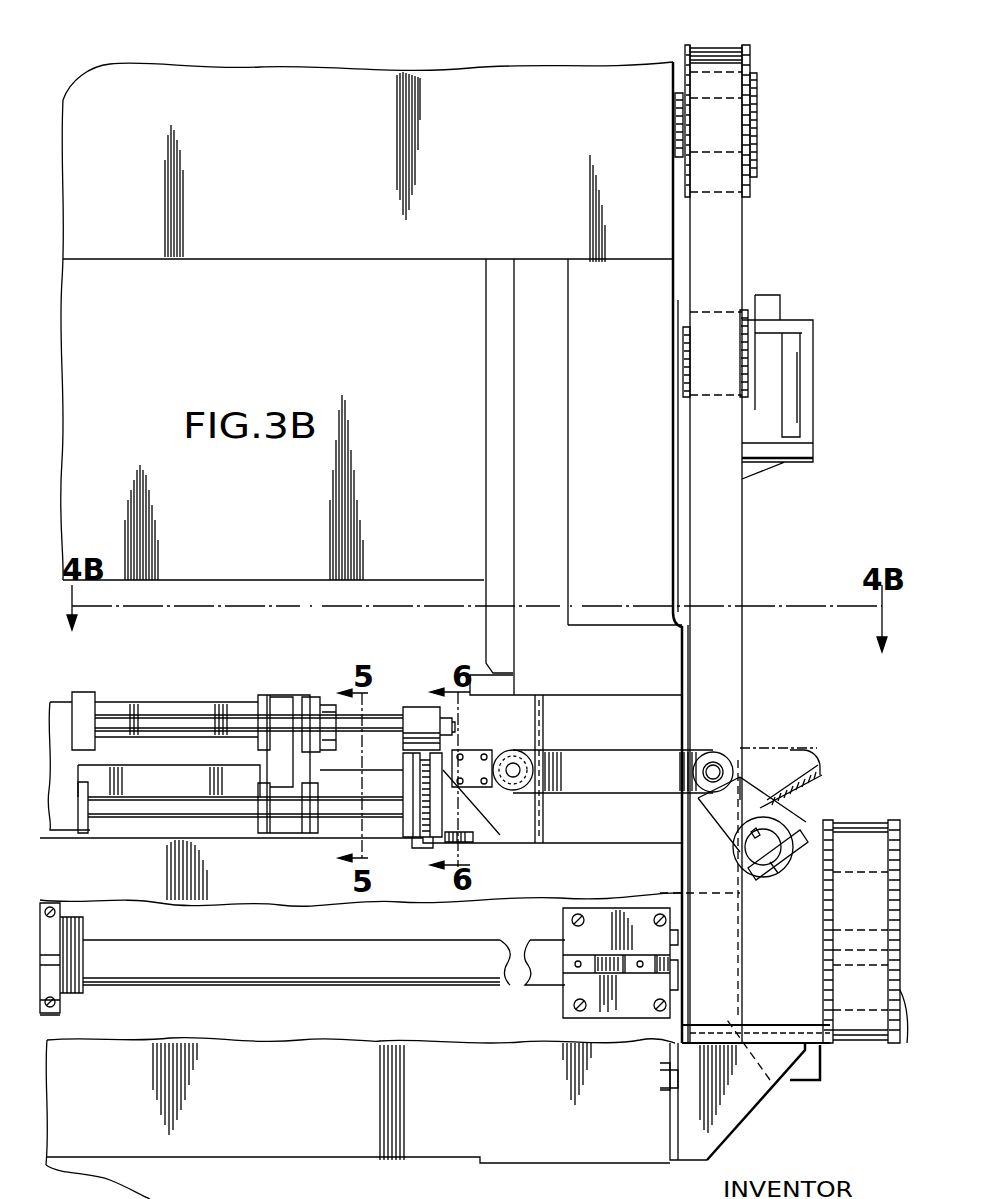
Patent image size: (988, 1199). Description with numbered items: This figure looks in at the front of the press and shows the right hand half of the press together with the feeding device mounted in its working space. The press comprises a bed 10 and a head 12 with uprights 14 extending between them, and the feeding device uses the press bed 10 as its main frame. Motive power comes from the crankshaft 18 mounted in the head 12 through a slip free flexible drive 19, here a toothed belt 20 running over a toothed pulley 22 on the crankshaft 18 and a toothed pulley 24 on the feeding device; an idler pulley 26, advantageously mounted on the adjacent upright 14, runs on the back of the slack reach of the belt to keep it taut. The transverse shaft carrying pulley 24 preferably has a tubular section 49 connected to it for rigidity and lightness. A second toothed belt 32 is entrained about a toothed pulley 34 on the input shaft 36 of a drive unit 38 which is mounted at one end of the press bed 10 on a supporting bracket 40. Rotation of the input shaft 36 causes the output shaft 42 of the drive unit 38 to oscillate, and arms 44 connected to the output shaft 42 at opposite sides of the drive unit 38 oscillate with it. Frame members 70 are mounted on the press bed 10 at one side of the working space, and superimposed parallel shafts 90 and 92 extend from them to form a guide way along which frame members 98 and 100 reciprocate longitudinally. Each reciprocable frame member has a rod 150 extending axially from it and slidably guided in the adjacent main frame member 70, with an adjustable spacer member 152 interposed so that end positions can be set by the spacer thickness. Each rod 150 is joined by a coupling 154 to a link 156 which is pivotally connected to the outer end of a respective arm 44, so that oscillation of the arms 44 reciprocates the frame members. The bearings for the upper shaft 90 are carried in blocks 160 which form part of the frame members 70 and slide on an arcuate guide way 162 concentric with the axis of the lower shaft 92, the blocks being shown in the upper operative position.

The bed 10 is at (600, 843).
The head 12 is at (338, 82).
The uprights 14 is at (660, 553).
The crankshaft 18 is at (757, 130).
The slip free flexible drive 19 is at (740, 241).
The toothed belt 20 is at (728, 278).
The toothed pulley 22 is at (750, 67).
The toothed pulley 24 is at (775, 1082).
The idler pulley 26 is at (750, 352).
The toothed belt 32 is at (860, 1040).
The toothed pulley 34 is at (900, 995).
The input shaft 36 is at (860, 940).
The drive unit 38 is at (793, 776).
The supporting bracket 40 is at (753, 1100).
The output shaft 42 is at (770, 843).
The arms 44 is at (760, 808).
The tubular section 49 is at (248, 975).
The frame members 70 is at (500, 835).
The upper shaft 90 is at (397, 713).
The lower shaft 92 is at (337, 810).
The frame member 98 is at (288, 830).
The frame member 100 is at (73, 830).
The rod 150 is at (387, 860).
The adjustable spacer member 152 is at (333, 723).
The coupling 154 is at (468, 767).
The link 156 is at (598, 755).
The blocks 160 is at (423, 717).
The arcuate guide way 162 is at (413, 850).